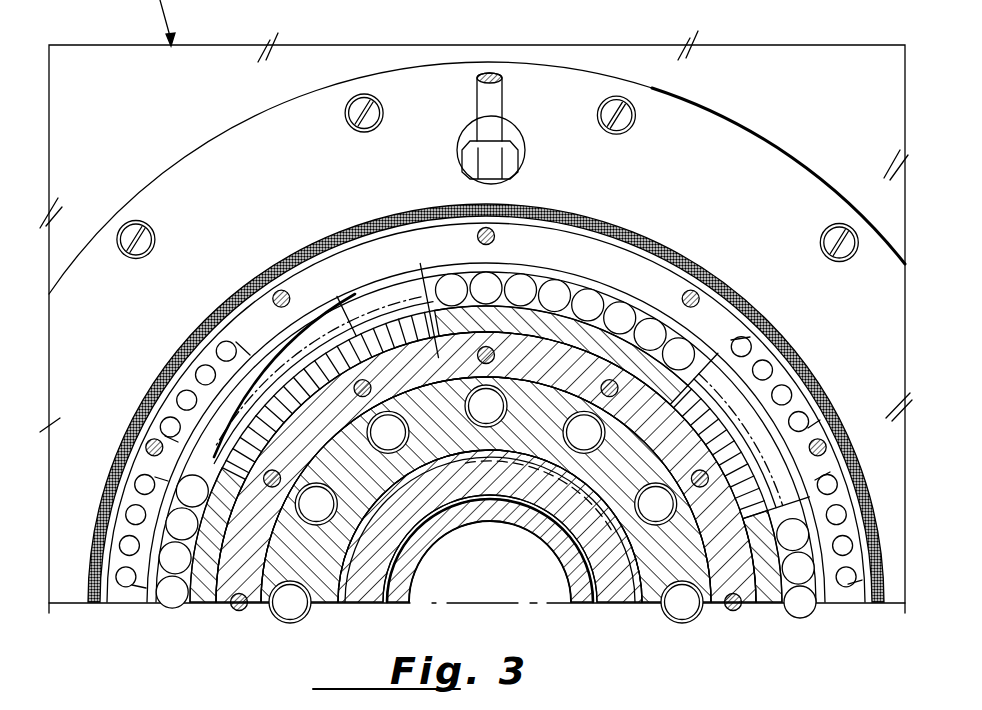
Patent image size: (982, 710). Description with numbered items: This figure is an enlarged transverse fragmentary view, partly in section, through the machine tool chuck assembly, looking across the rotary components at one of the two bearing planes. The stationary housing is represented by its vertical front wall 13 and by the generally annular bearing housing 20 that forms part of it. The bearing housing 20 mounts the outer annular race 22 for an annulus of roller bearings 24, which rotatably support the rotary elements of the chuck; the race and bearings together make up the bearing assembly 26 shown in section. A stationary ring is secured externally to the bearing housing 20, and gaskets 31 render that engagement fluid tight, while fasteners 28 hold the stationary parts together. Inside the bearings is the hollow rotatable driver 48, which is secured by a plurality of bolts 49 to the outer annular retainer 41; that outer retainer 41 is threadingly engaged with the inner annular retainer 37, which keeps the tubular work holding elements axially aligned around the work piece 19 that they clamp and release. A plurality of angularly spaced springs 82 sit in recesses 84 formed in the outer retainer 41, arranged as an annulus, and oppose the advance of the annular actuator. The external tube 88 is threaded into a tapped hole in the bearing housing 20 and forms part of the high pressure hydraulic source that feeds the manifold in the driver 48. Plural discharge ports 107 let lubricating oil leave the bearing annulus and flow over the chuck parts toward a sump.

The front wall 13 is at (768, 73).
The work piece 19 is at (413, 598).
The bearing housing 20 is at (662, 268).
The outer annular race 22 is at (385, 268).
The roller bearings 24 is at (585, 297).
The bearing race 26 is at (345, 340).
The screws 28 is at (350, 103).
The gaskets 31 is at (583, 225).
The annular retainer 37 is at (600, 603).
The outer annular retainer 41 is at (513, 532).
The rotatable driver 48 is at (433, 347).
The bolts 49 is at (610, 385).
The springs 82 is at (405, 422).
The recesses 84 is at (385, 457).
The external tube 88 is at (485, 99).
The discharge ports 107 is at (170, 427).